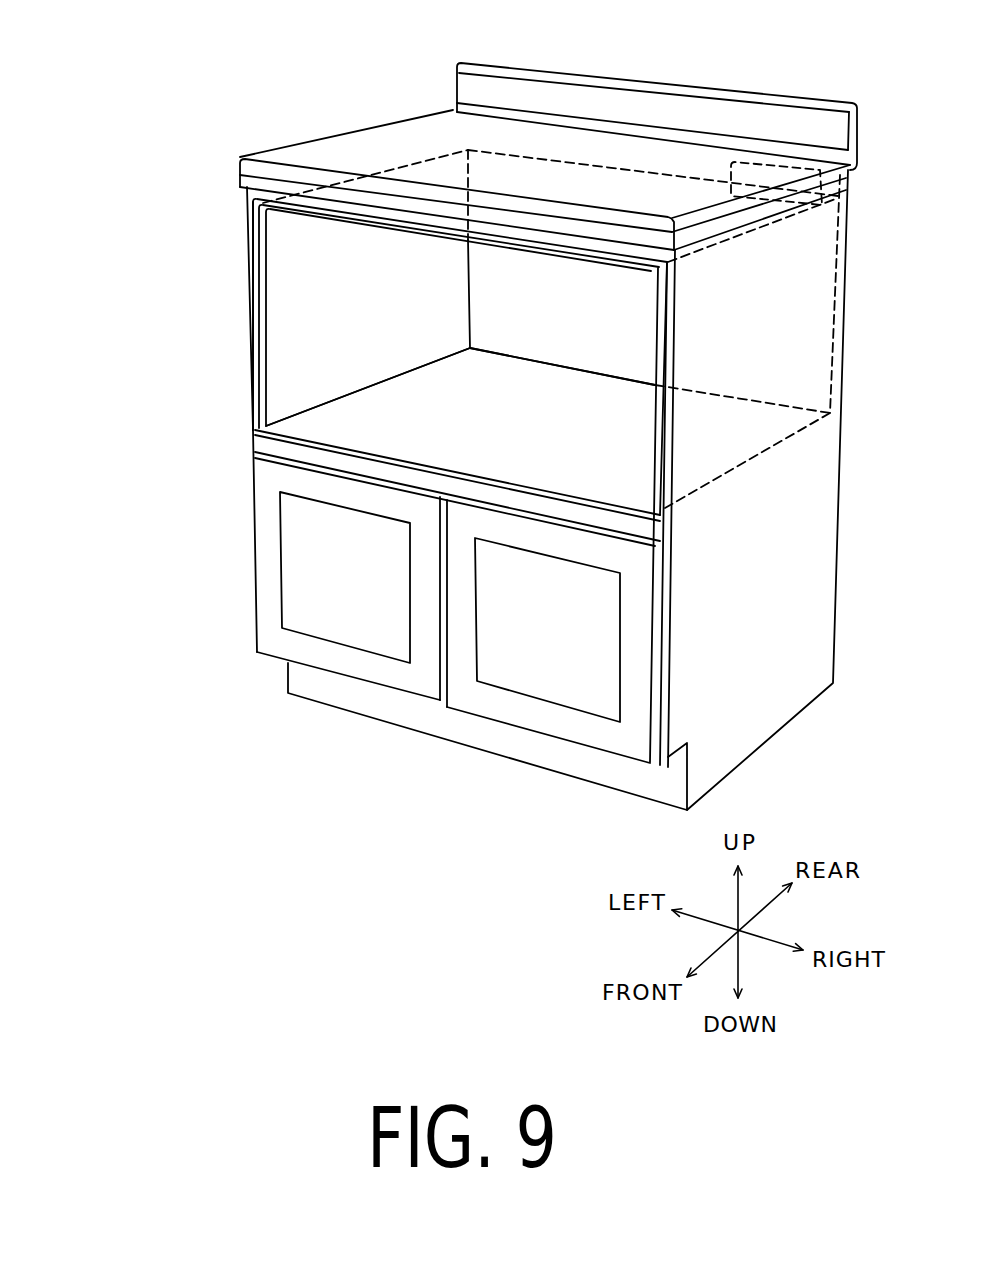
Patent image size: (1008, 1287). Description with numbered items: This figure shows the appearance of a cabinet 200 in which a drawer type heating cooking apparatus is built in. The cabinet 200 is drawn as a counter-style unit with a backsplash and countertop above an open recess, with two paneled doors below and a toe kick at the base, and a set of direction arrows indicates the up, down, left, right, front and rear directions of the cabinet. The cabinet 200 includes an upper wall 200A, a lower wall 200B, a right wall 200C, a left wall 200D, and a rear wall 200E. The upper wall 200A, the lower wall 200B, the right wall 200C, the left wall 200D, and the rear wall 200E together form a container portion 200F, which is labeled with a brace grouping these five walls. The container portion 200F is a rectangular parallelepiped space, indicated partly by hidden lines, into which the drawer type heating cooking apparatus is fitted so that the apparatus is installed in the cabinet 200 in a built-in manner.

The cabinet 200 is at (265, 76).
The upper wall 200A is at (490, 192).
The lower wall 200B is at (330, 422).
The right wall 200C is at (702, 336).
The left wall 200D is at (283, 280).
The rear wall 200E is at (517, 285).
The container portion 200F is at (122, 227).